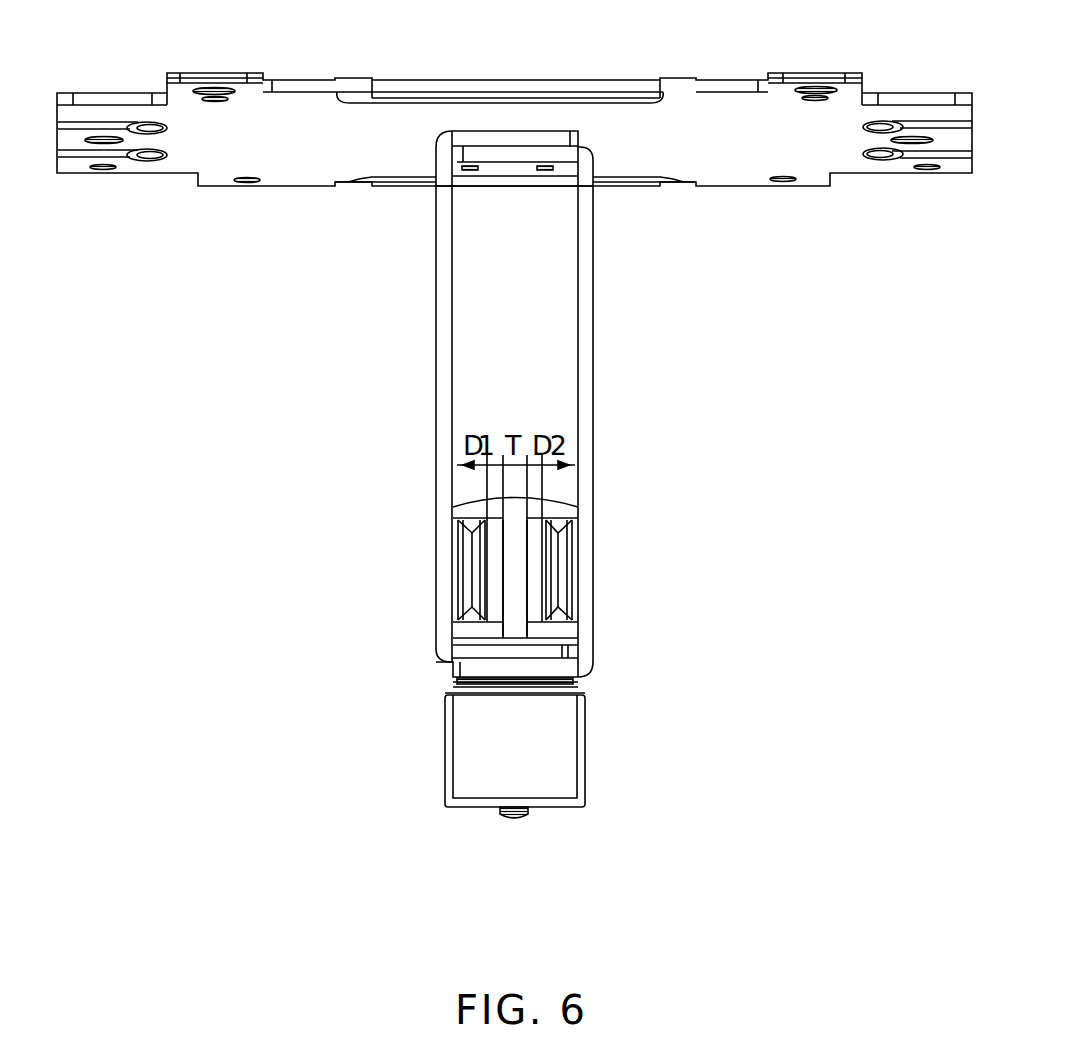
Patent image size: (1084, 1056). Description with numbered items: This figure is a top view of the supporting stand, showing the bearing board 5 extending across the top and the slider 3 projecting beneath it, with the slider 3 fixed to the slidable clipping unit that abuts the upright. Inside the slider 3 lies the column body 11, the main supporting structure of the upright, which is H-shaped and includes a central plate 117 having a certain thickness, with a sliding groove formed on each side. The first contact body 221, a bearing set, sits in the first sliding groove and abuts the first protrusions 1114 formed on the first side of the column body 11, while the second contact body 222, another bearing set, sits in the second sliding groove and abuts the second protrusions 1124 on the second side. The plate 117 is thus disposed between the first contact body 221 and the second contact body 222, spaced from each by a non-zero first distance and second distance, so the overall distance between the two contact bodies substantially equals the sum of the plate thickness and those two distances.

The bearing board 5 is at (853, 97).
The slider 3 is at (593, 321).
The column body 11 is at (549, 500).
The plate 117 is at (518, 600).
The first contact body 221 is at (470, 577).
The second contact body 222 is at (562, 568).
The first protrusions 1114 is at (468, 527).
The second protrusions 1124 is at (573, 512).